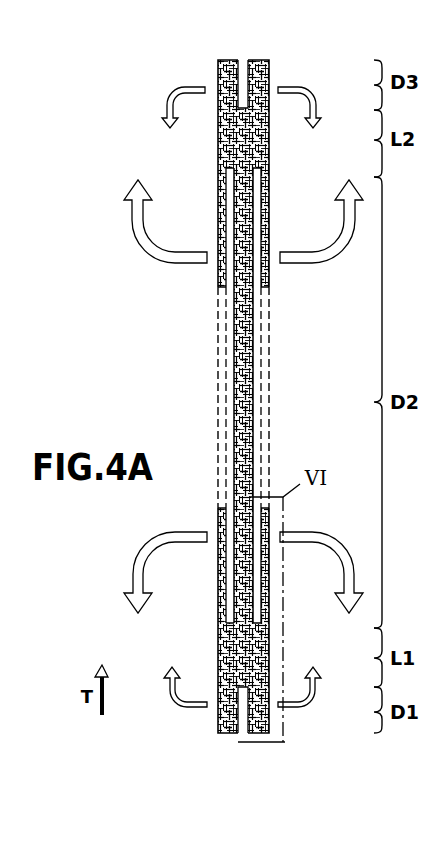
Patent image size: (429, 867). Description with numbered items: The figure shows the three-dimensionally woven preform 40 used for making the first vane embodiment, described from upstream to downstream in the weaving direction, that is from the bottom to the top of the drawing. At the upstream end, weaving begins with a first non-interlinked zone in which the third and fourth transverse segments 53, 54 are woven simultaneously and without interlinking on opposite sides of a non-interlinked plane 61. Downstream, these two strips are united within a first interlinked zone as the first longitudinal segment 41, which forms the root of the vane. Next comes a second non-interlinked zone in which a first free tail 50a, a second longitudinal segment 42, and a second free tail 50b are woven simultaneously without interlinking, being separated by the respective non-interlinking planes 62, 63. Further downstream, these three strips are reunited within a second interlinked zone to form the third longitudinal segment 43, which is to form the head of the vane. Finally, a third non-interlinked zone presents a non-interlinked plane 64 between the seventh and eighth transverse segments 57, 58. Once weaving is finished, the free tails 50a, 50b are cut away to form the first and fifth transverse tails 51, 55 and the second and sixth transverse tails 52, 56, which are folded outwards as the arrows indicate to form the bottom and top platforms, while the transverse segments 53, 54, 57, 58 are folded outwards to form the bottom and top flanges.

The three-dimensionally woven preform 40 is at (108, 296).
The first longitudinal segment 41 is at (232, 655).
The second longitudinal segment 42 is at (241, 365).
The third longitudinal segment 43 is at (242, 138).
The first free tail 50a is at (264, 332).
The second free tail 50b is at (223, 332).
The first transverse tail 51 is at (266, 580).
The second transverse tail 52 is at (221, 580).
The third transverse segment 53 is at (265, 727).
The fourth transverse segment 54 is at (223, 727).
The fifth transverse tail 55 is at (267, 212).
The sixth transverse tail 56 is at (221, 212).
The seventh transverse segment 57 is at (265, 69).
The eighth transverse segment 58 is at (222, 69).
The non-interlinked plane 61 is at (246, 727).
The non-interlinking plane 62 is at (263, 403).
The non-interlinking plane 63 is at (223, 403).
The non-interlinked plane 64 is at (245, 74).